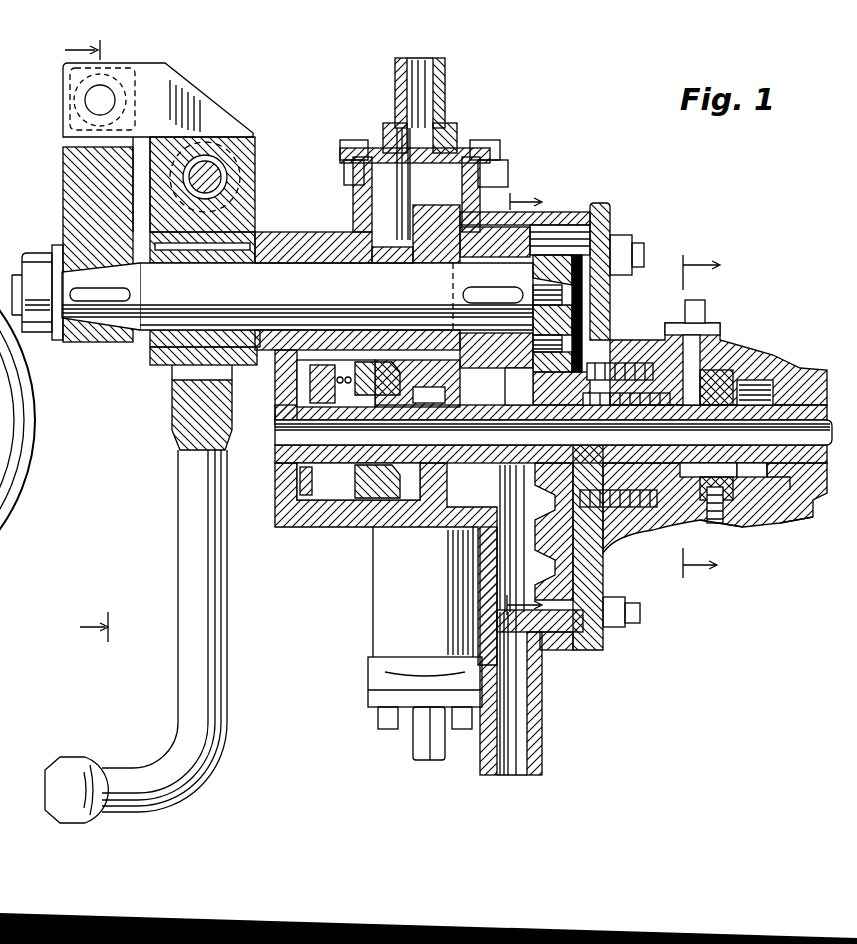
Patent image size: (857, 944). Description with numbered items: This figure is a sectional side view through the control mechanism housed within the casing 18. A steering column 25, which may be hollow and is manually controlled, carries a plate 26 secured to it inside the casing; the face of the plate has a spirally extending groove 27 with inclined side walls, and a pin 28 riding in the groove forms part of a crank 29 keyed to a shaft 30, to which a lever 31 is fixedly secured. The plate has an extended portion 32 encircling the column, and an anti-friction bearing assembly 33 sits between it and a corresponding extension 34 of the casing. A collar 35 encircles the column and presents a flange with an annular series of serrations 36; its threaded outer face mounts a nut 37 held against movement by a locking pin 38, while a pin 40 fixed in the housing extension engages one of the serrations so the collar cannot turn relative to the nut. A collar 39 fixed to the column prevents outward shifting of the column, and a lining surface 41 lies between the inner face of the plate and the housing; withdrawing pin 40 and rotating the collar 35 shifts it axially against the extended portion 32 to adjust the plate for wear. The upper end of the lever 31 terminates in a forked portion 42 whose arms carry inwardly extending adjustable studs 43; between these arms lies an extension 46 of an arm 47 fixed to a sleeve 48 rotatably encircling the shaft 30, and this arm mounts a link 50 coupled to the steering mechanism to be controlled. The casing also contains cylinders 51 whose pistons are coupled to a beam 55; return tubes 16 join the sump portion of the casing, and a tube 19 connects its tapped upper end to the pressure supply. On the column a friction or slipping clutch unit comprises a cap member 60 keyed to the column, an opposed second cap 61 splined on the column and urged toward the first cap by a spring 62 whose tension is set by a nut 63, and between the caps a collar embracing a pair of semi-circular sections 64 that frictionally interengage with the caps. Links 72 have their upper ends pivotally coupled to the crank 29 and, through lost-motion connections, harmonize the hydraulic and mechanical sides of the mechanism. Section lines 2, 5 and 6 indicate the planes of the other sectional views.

The section line 2- 2 is at (526, 392).
The section line 5- 5 is at (710, 422).
The section line 6- 6 is at (97, 340).
The return tubes 16 is at (542, 727).
The casing 18 is at (612, 215).
The tube 19 is at (228, 177).
The steering column 25 is at (802, 500).
The plate 26 is at (612, 236).
The spirally extending groove 27 is at (0, 427).
The pin 28 is at (0, 332).
The crank 29 is at (560, 210).
The shaft 30 is at (297, 296).
The lever 31 is at (63, 185).
The extended portion 32 is at (645, 510).
The anti-friction bearing assembly 33 is at (660, 340).
The extension 34 is at (720, 380).
The collar 35 is at (745, 395).
The serrations 36 is at (703, 500).
The nut 37 is at (770, 505).
The locking pin 38 is at (750, 530).
The collar 39 is at (752, 480).
The pin 40 is at (705, 365).
The lining surface 41 is at (590, 590).
The forked portion 42 is at (63, 130).
The stud 43 is at (85, 95).
The extension 46 is at (175, 75).
The arm 47 is at (240, 160).
The sleeve 48 is at (153, 348).
The link 50 is at (185, 520).
The cylinders 51 is at (385, 634).
The beam 55 is at (430, 206).
The cap member 60 is at (392, 520).
The second cap 61 is at (300, 530).
The spring 62 is at (295, 500).
The nut 63 is at (300, 480).
The semi-circular sections 64 is at (362, 487).
The links 72 is at (455, 373).